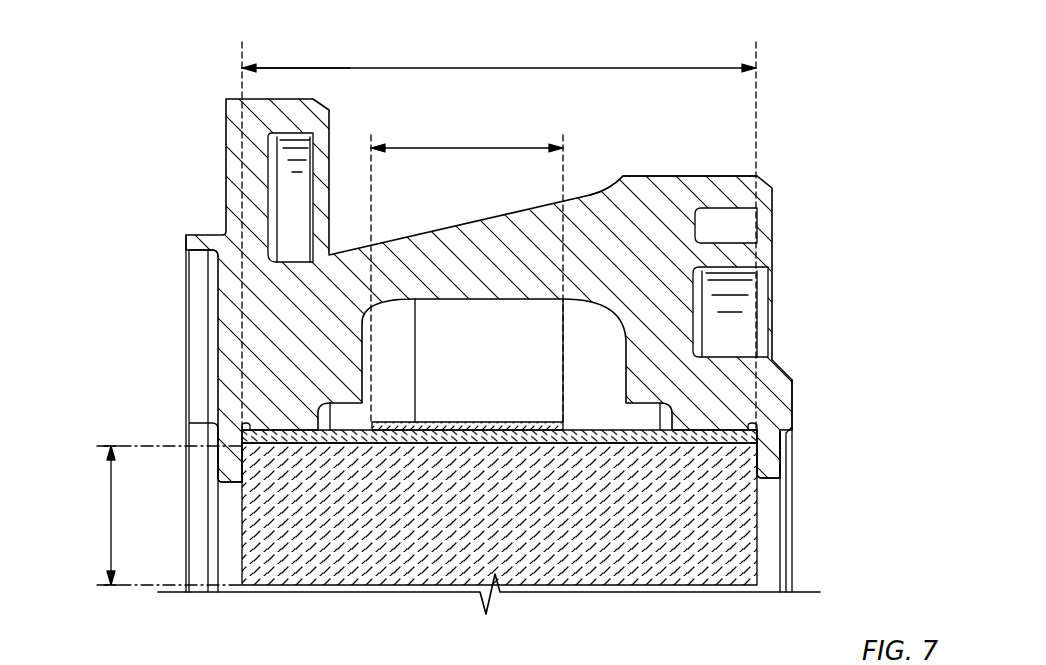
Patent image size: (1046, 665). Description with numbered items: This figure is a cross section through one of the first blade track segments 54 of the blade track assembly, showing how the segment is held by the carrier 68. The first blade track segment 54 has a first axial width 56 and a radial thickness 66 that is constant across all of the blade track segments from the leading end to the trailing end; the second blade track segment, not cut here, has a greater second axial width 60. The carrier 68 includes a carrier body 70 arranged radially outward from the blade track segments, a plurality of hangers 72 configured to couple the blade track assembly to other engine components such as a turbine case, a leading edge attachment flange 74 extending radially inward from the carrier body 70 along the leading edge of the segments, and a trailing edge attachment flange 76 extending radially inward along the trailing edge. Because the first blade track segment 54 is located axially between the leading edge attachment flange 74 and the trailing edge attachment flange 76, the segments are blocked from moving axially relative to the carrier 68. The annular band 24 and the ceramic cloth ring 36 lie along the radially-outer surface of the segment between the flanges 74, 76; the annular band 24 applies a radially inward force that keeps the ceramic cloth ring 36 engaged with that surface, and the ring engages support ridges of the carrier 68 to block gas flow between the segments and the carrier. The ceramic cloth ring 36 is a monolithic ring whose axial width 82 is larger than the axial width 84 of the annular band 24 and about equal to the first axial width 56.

The annular band 24 is at (486, 420).
The ceramic cloth ring 36 is at (750, 433).
The first blade track segment 54 is at (745, 539).
The first axial width 56 is at (616, 67).
The second axial width 60 is at (594, 664).
The radial thickness 66 is at (111, 526).
The carrier 68 is at (190, 196).
The carrier body 70 is at (637, 163).
The hangers 72 is at (304, 92).
The leading edge attachment flange 74 is at (226, 472).
The trailing edge attachment flange 76 is at (767, 471).
The axial width of the ceramic cloth ring 82 is at (347, 67).
The axial width of the annular band 84 is at (467, 147).